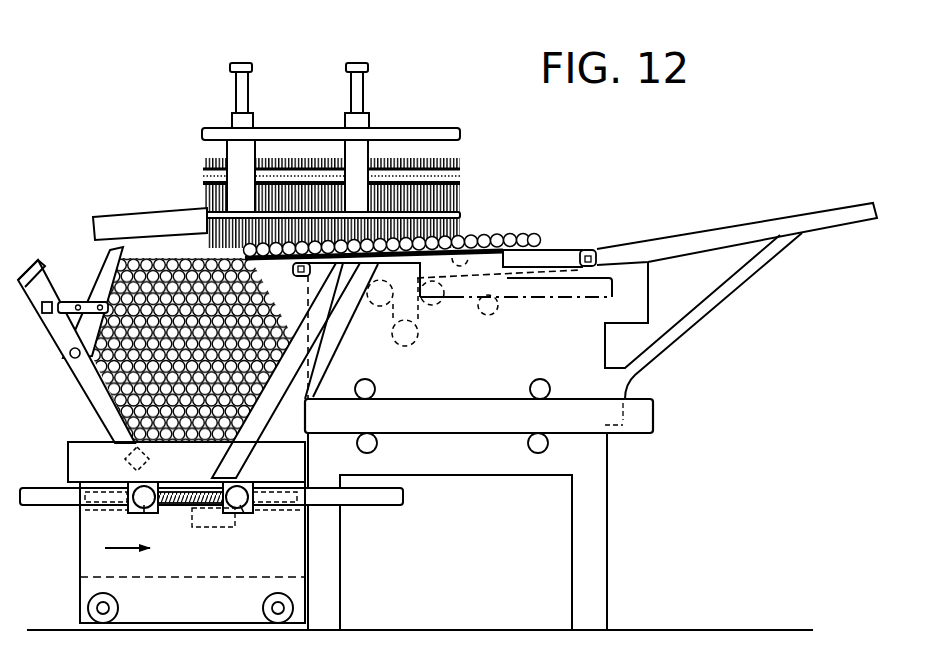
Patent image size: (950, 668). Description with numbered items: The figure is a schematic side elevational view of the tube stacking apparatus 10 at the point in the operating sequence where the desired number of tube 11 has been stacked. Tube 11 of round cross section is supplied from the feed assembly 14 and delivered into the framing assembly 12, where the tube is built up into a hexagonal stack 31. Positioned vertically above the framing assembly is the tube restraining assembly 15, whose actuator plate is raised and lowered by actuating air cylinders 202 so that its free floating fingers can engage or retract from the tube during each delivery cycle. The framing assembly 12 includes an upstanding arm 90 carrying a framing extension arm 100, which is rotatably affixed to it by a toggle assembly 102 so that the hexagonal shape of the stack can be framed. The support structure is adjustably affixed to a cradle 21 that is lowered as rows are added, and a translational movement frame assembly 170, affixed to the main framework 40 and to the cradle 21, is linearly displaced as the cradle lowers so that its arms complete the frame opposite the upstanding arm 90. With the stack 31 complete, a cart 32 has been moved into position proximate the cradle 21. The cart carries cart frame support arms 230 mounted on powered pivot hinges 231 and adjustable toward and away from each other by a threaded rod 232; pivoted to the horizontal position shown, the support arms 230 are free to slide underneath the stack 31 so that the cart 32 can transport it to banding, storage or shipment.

The tube stacking apparatus 10 is at (722, 181).
The tube 11 is at (472, 237).
The framing assembly 12 is at (38, 327).
The feed assembly 14 is at (722, 319).
The tube restraining assembly 15 is at (420, 116).
The cradle 21 is at (88, 463).
The stack 31 is at (157, 263).
The cart 32 is at (97, 567).
The main framework 40 is at (617, 578).
The upstanding arm 90 is at (22, 275).
The framing extension arm 100 is at (112, 297).
The toggle assembly 102 is at (46, 256).
The translational movement frame assembly 170 is at (330, 441).
The actuating air cylinders 202 is at (355, 85).
The cart frame support arms 230 is at (30, 488).
The powered pivot hinges 231 is at (140, 512).
The threaded rod 232 is at (182, 508).